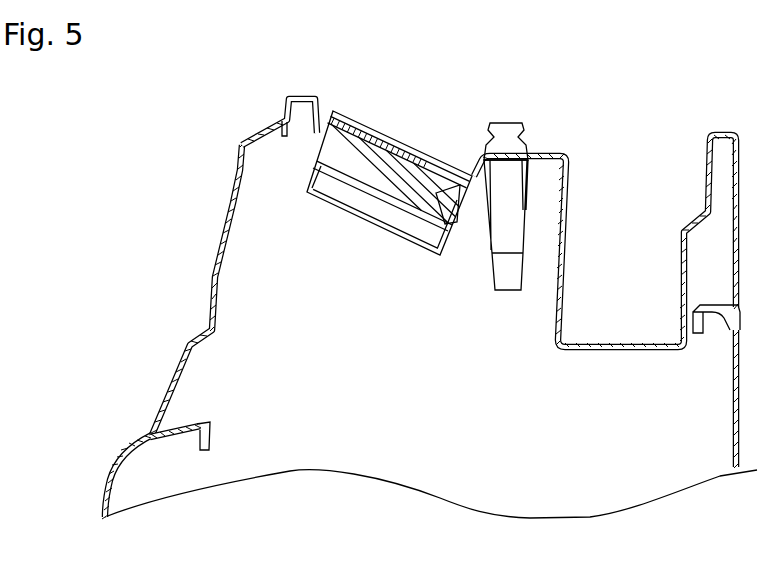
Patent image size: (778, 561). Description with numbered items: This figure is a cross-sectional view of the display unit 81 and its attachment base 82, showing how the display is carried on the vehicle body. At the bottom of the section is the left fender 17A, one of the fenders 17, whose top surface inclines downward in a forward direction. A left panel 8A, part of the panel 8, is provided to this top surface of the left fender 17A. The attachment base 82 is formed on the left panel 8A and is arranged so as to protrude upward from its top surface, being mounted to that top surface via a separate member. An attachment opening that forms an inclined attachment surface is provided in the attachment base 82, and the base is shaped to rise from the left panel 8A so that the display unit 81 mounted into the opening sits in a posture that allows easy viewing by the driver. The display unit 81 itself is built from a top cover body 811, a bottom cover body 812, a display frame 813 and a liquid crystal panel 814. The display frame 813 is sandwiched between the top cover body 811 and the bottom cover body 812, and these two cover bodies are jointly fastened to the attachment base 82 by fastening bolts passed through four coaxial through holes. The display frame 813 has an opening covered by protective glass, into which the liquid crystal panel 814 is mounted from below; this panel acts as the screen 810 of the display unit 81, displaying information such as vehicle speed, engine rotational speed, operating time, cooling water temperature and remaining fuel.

The panel 8 is at (200, 267).
The left panel 8A is at (200, 267).
The attachment base 82 is at (251, 122).
The fender 17 is at (126, 445).
The left fender 17A is at (126, 461).
The display unit 81 is at (471, 228).
The screen 810 is at (401, 159).
The liquid crystal panel 814 is at (375, 153).
The display frame 813 is at (430, 158).
The bottom cover body 812 is at (366, 214).
The top cover body 811 is at (452, 200).